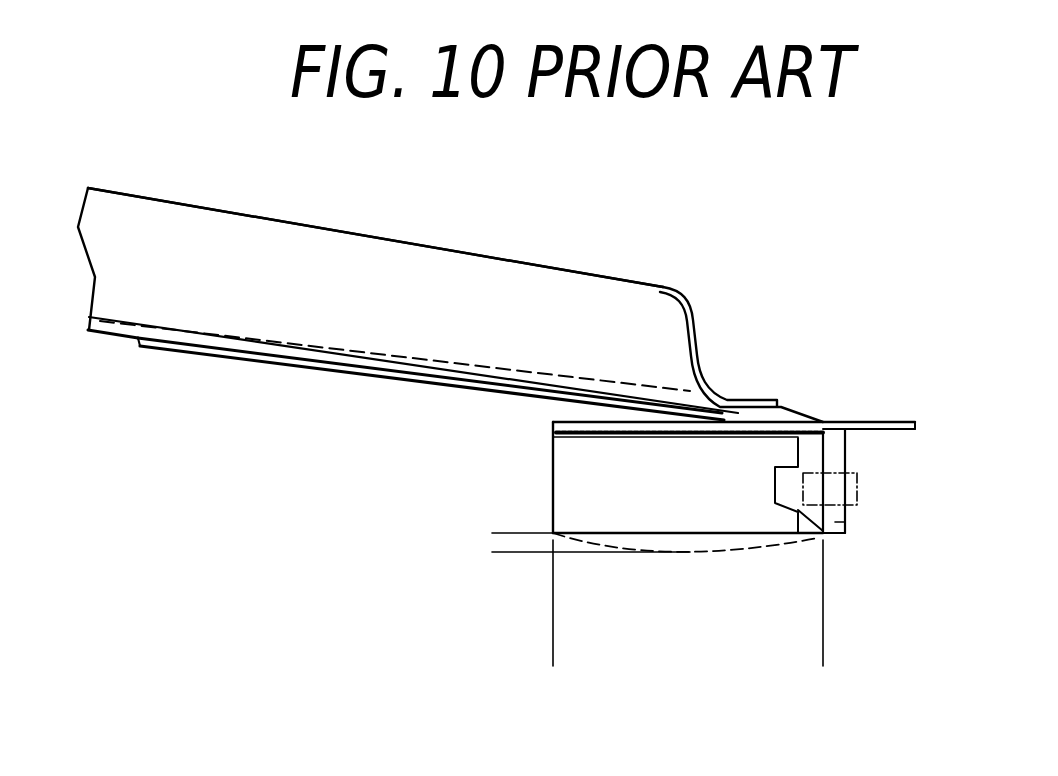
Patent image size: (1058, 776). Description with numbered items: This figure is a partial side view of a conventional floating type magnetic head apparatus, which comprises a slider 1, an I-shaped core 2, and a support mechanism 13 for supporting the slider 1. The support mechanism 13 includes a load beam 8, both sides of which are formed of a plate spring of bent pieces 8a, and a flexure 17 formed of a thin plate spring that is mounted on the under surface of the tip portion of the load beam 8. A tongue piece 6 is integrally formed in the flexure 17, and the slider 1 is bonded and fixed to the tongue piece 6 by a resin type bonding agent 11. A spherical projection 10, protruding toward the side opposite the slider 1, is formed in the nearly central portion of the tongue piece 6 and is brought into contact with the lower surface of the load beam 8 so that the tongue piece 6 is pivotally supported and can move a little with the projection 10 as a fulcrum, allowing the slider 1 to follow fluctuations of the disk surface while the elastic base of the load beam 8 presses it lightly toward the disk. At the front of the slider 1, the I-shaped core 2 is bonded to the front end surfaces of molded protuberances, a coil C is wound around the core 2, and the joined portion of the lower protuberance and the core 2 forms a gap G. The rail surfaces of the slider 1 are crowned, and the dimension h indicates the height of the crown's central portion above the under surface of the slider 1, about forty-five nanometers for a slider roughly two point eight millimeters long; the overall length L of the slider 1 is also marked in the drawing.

The slider 1 is at (665, 515).
The I-shaped core 2 is at (847, 523).
The tongue piece 6 is at (567, 422).
The load beam 8 is at (110, 334).
The bent pieces 8a is at (268, 242).
The spherical projection 10 is at (697, 402).
The resin type bonding agent 11 is at (553, 434).
The support mechanism 13 is at (540, 256).
The flexure 17 is at (307, 367).
The coil C is at (857, 491).
The gap G is at (814, 546).
The dimension of the protuberance of the crown h is at (503, 503).
The length L is at (823, 655).